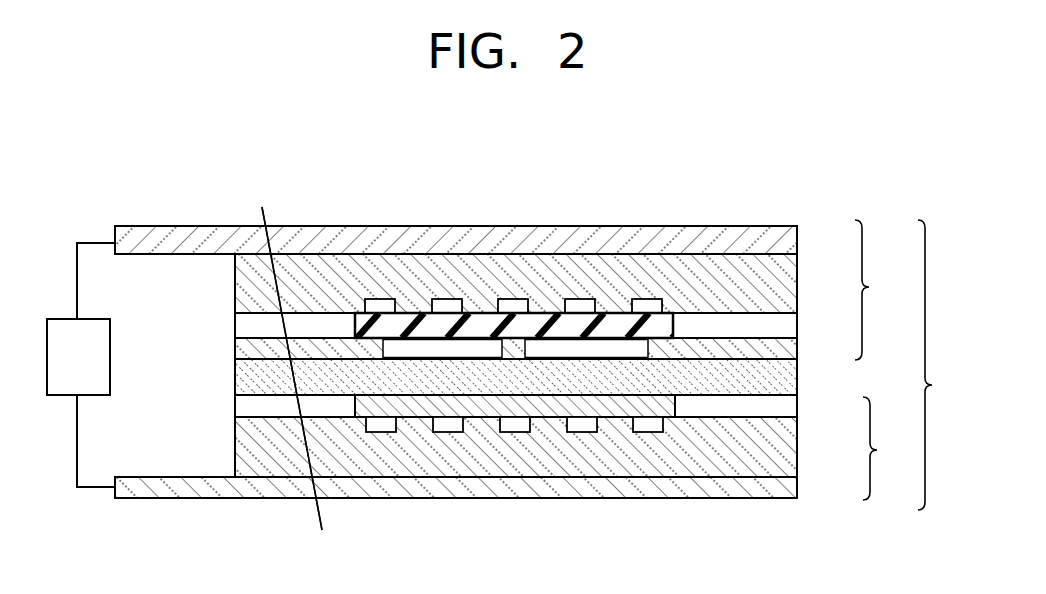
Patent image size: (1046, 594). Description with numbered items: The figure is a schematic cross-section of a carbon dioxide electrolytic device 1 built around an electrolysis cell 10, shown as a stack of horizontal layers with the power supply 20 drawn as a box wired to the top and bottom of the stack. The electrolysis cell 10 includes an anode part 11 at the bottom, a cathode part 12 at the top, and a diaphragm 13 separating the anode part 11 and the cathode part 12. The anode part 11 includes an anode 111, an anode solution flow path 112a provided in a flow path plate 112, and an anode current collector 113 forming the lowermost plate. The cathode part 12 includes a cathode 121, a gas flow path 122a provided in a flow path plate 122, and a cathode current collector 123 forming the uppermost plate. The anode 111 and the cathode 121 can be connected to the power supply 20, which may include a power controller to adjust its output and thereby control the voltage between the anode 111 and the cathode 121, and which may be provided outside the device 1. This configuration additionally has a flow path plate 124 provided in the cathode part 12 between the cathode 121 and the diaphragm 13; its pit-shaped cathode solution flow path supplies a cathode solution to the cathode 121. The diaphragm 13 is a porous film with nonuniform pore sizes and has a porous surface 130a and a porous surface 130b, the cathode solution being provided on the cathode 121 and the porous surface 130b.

The carbon dioxide electrolytic device 1 is at (156, 180).
The electrolysis cell 10 is at (940, 365).
The anode part 11 is at (885, 448).
The cathode part 12 is at (880, 290).
The diaphragm 13 is at (775, 378).
The power supply 20 is at (112, 356).
The anode 111 is at (675, 406).
The flow path plate 112 is at (785, 445).
The anode solution flow path 112a is at (655, 424).
The anode current collector 113 is at (778, 485).
The cathode 121 is at (675, 326).
The flow path plate 122 is at (785, 289).
The gas flow path 122a is at (447, 307).
The cathode current collector 123 is at (777, 237).
The flow path plate 124 is at (775, 350).
The porous surface 130a is at (310, 382).
The porous surface 130b is at (279, 357).